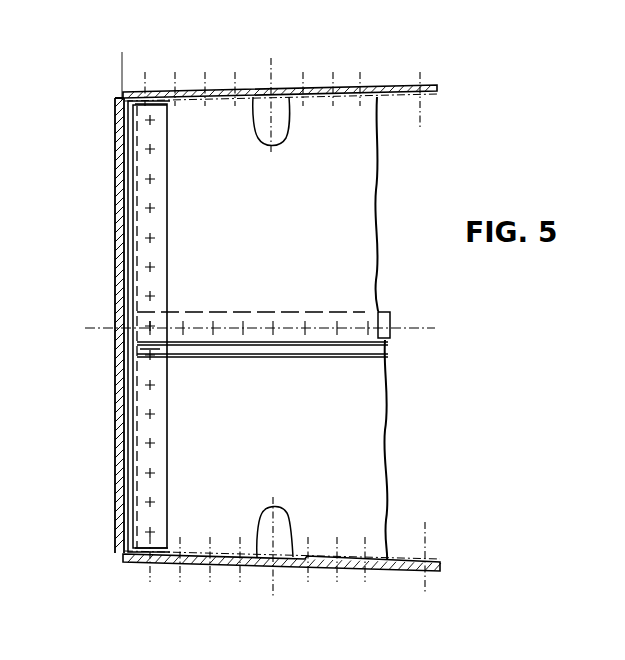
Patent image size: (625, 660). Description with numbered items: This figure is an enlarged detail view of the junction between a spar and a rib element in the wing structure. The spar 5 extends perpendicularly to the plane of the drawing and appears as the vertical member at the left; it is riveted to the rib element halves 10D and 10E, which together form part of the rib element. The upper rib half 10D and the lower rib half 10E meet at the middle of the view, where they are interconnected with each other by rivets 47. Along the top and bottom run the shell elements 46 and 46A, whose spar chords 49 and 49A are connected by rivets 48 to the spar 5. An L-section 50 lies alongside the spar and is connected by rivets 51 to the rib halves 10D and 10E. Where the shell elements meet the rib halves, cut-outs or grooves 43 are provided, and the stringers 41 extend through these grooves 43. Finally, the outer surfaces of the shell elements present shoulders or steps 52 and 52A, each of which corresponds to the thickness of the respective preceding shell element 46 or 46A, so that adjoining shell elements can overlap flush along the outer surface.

The spar 5 is at (116, 405).
The rivets 48 is at (114, 116).
The spar chord 49 is at (124, 96).
The spar chord 49A is at (138, 515).
The L-section 50 is at (168, 224).
The rivets 51 is at (150, 206).
The shoulder or step 52 is at (125, 66).
The shoulder or step 52A is at (127, 582).
The stringers 41 is at (273, 80).
The shell element 46 is at (378, 84).
The shell element 46A is at (386, 574).
The cut-outs or grooves 43 is at (284, 128).
The rib element half 10D is at (352, 174).
The rib element half 10E is at (364, 452).
The rivets 47 is at (215, 334).